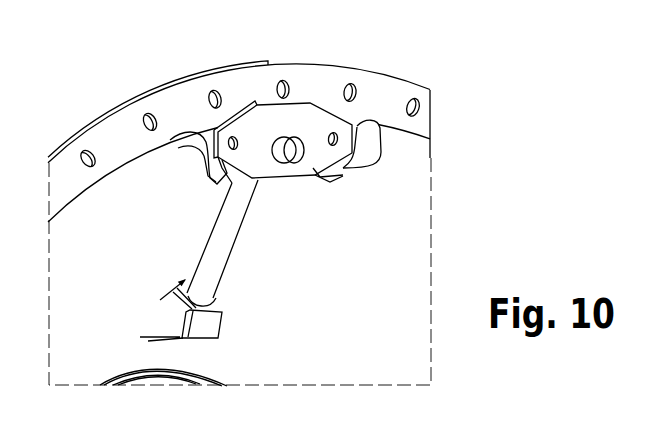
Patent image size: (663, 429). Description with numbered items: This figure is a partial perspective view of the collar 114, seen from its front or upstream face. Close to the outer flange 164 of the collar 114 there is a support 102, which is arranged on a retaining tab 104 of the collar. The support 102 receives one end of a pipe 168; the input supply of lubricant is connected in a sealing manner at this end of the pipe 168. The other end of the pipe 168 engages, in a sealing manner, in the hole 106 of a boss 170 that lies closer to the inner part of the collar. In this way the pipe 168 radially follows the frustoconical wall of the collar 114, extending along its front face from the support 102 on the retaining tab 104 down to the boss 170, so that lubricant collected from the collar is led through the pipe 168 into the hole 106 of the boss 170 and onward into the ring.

The support 102 is at (260, 127).
The retaining tab 104 is at (178, 150).
The hole 106 is at (220, 306).
The collar 114 is at (418, 152).
The outer flange 164 is at (113, 148).
The pipe 168 is at (222, 242).
The boss 170 is at (208, 328).